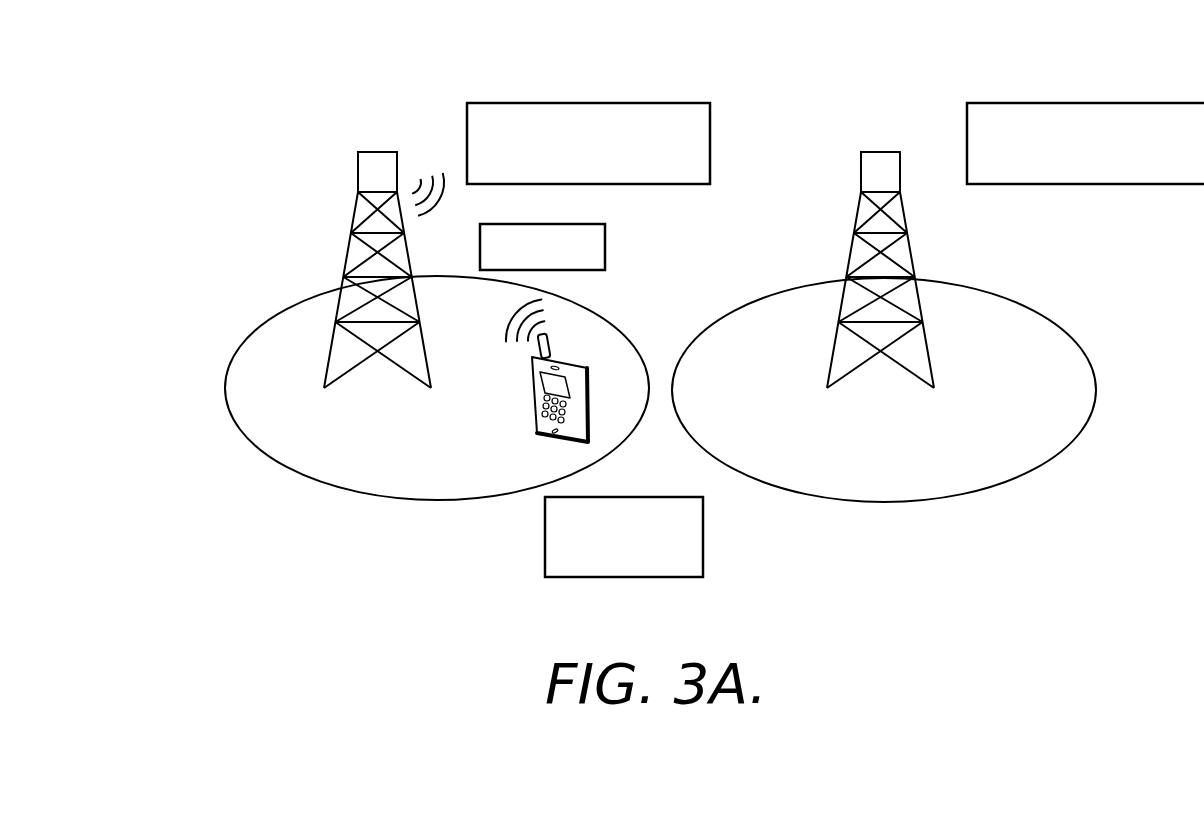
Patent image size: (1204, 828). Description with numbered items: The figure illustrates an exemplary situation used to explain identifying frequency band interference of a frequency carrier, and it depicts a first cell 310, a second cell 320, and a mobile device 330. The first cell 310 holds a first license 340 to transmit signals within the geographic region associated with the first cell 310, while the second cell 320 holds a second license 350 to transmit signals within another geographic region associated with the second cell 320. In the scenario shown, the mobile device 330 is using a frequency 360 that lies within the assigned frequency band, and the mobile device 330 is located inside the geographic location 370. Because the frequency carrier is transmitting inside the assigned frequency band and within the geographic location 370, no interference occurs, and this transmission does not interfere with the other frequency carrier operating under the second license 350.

The first cell 310 is at (348, 490).
The second cell 320 is at (973, 490).
The mobile device 330 is at (532, 395).
The first license 340 is at (619, 103).
The second license 350 is at (1125, 103).
The frequency 360 is at (605, 247).
The geographic location 370 is at (632, 497).